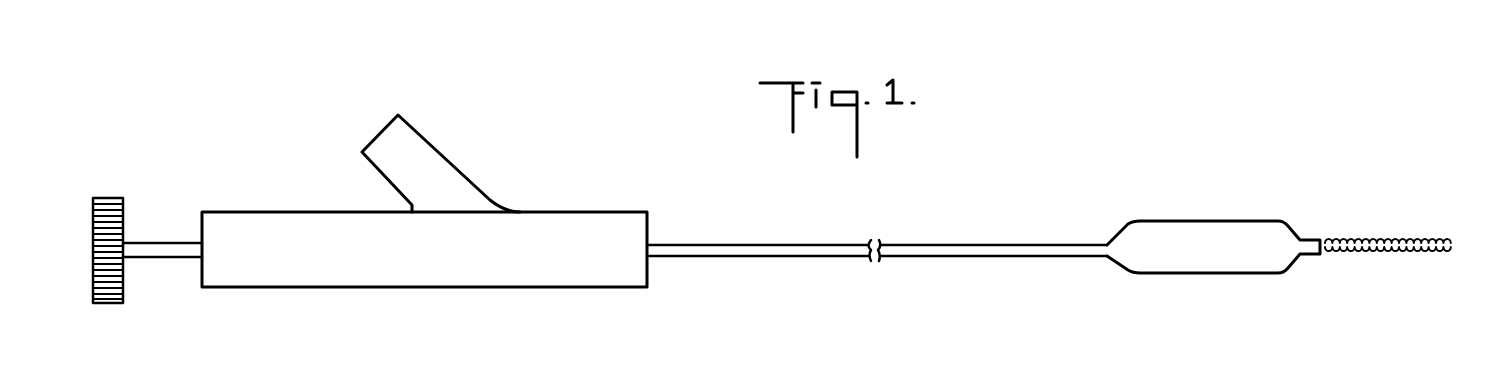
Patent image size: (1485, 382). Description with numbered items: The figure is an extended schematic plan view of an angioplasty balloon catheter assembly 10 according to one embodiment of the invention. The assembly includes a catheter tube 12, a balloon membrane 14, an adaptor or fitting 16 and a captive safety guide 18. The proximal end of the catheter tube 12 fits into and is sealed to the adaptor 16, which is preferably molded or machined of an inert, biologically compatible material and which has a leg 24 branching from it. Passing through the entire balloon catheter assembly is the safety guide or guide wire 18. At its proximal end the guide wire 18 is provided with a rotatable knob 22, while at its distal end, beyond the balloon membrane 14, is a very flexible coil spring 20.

The angioplasty balloon catheter assembly 10 is at (570, 197).
The catheter tube 12 is at (945, 243).
The balloon membrane 14 is at (1236, 222).
The adaptor or fitting 16 is at (415, 288).
The captive safety guide 18 is at (170, 252).
The coil spring 20 is at (1418, 252).
The rotatable knob 22 is at (108, 305).
The leg 24 is at (402, 138).